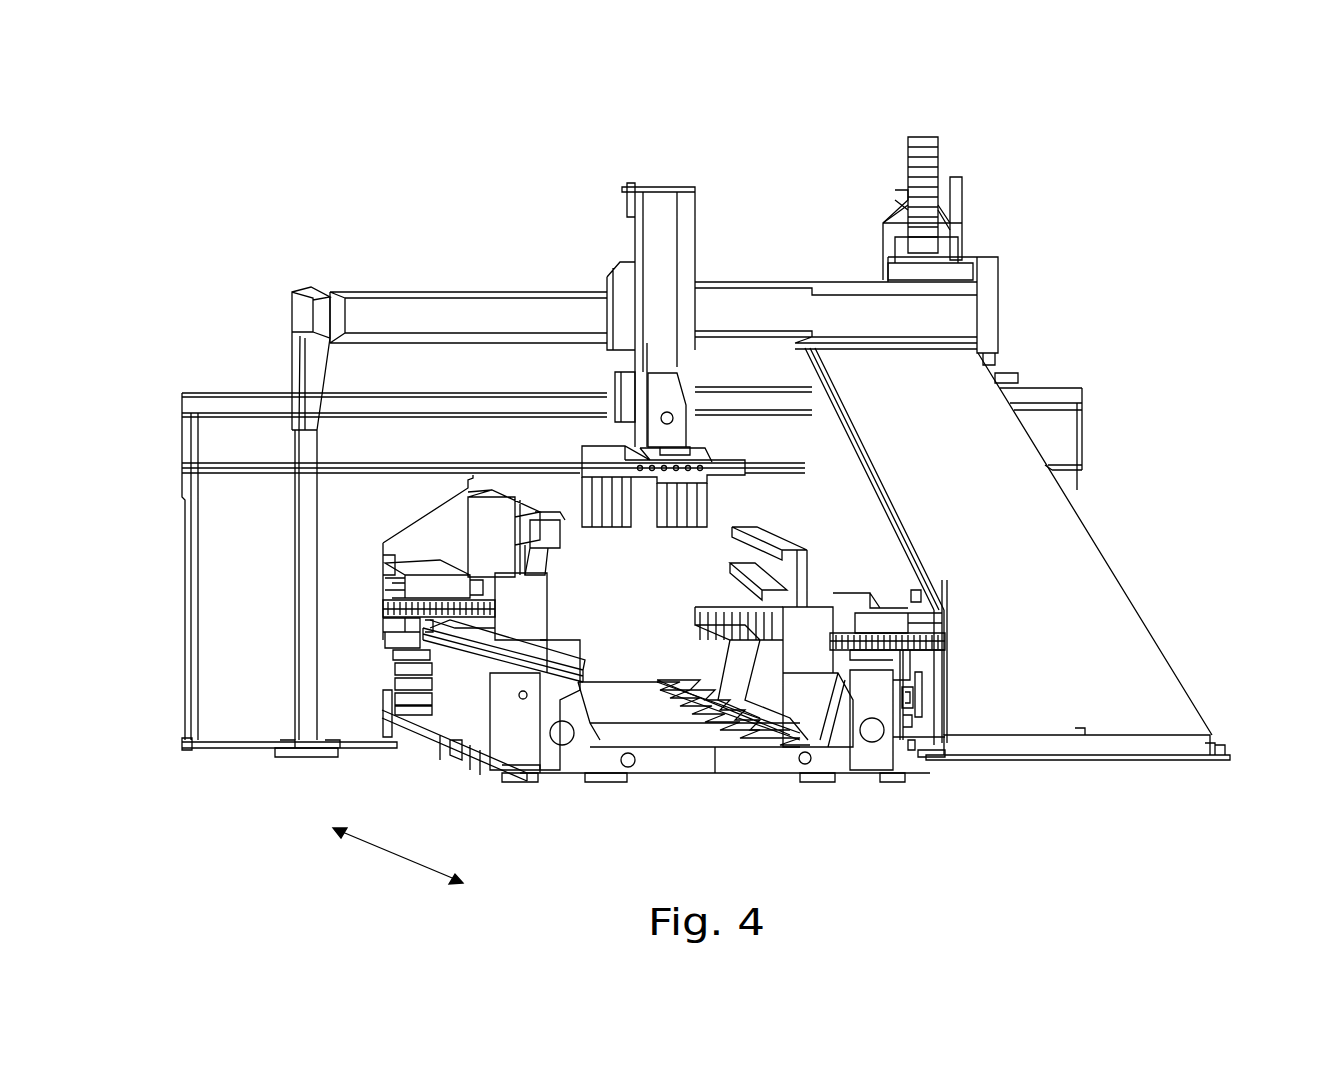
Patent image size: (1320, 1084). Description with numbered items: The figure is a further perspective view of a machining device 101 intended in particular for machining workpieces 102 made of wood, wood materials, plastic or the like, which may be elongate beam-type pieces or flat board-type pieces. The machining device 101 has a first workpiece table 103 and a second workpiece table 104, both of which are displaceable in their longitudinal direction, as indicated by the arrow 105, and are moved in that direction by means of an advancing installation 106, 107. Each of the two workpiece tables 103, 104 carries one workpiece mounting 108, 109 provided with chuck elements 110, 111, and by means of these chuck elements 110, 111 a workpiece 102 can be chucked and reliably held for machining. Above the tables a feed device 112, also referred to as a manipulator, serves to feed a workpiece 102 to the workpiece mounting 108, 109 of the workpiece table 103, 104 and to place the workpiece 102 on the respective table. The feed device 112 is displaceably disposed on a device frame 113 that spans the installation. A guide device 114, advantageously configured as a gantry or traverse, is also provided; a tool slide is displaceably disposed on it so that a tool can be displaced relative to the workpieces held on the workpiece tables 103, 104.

The machining device 101 is at (798, 133).
The workpiece 102 is at (545, 533).
The first workpiece table 103 is at (517, 618).
The second workpiece table 104 is at (820, 655).
The arrow 105 is at (385, 852).
The advancing installation 106 is at (432, 577).
The advancing installation 107 is at (891, 620).
The workpiece mounting 108 is at (498, 492).
The workpiece mounting 109 is at (762, 512).
The chuck element 110 is at (452, 528).
The chuck element 111 is at (815, 555).
The feed device 112 is at (665, 205).
The device frame 113 is at (452, 313).
The guide device 114 is at (247, 428).